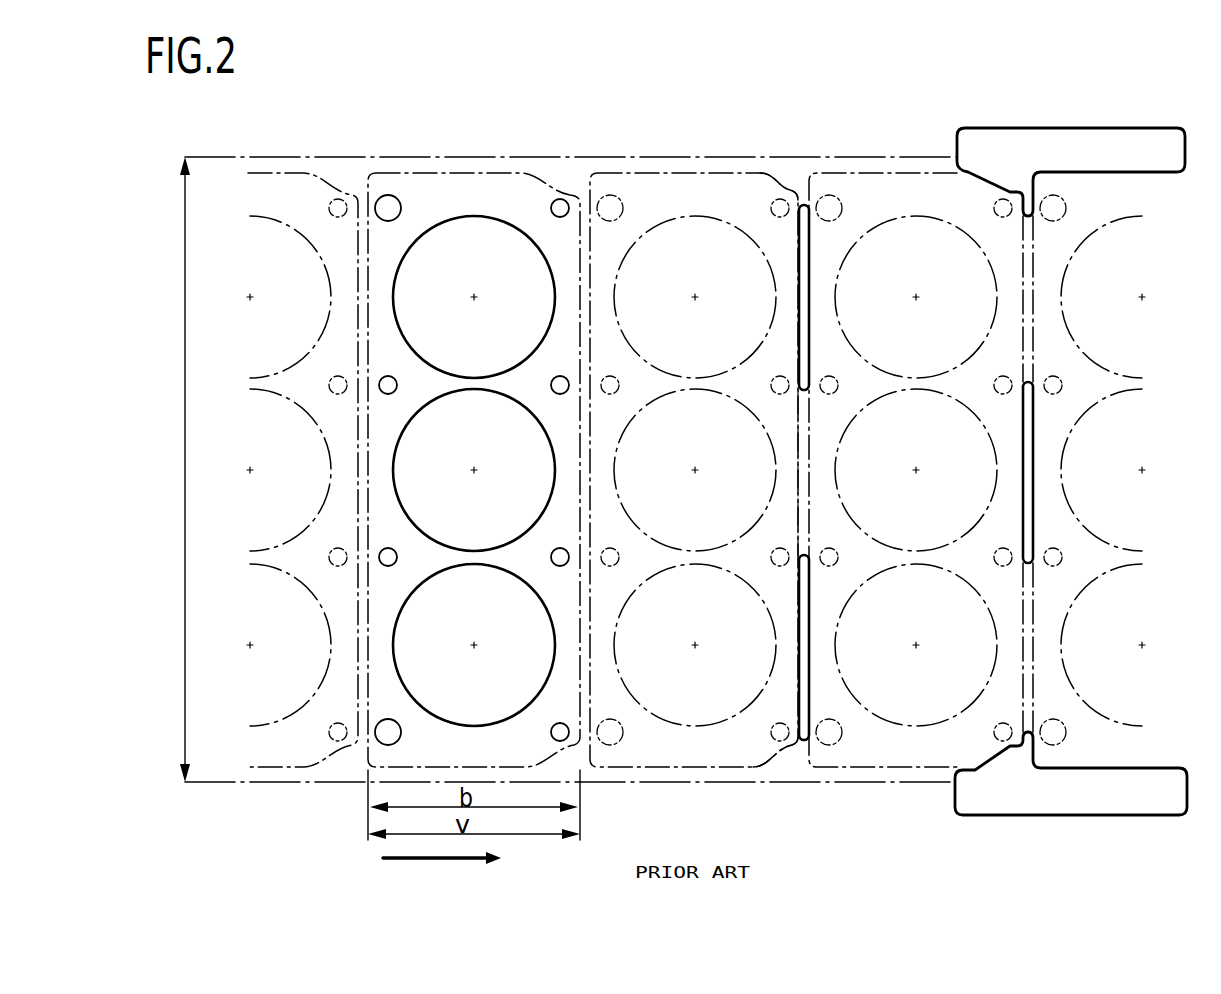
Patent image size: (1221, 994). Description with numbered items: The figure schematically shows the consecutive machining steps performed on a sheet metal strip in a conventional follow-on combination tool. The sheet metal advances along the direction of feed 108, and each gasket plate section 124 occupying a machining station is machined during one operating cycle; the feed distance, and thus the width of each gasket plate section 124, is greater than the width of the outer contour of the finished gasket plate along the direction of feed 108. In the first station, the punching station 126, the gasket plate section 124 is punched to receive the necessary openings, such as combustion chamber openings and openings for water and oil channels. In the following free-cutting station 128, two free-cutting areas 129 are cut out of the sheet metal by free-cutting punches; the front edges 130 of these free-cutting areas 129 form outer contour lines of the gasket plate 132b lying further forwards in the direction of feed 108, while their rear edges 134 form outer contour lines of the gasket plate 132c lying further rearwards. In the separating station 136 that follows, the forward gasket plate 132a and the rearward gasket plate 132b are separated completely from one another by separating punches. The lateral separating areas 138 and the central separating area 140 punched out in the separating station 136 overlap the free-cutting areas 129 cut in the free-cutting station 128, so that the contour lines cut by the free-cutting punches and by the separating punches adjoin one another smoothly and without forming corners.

The direction of feed 108 is at (398, 850).
The gasket plate section 124 is at (278, 192).
The punching station 126 is at (423, 138).
The free-cutting station 128 is at (692, 138).
The free-cutting area 129 is at (805, 204).
The front edge 130 is at (811, 258).
The gasket plate 132a is at (1122, 742).
The gasket plate 132b is at (912, 757).
The gasket plate 132c is at (662, 755).
The rear edge 134 is at (797, 272).
The separating station 136 is at (1053, 110).
The lateral separating area 138 is at (1108, 140).
The central separating area 140 is at (1034, 458).